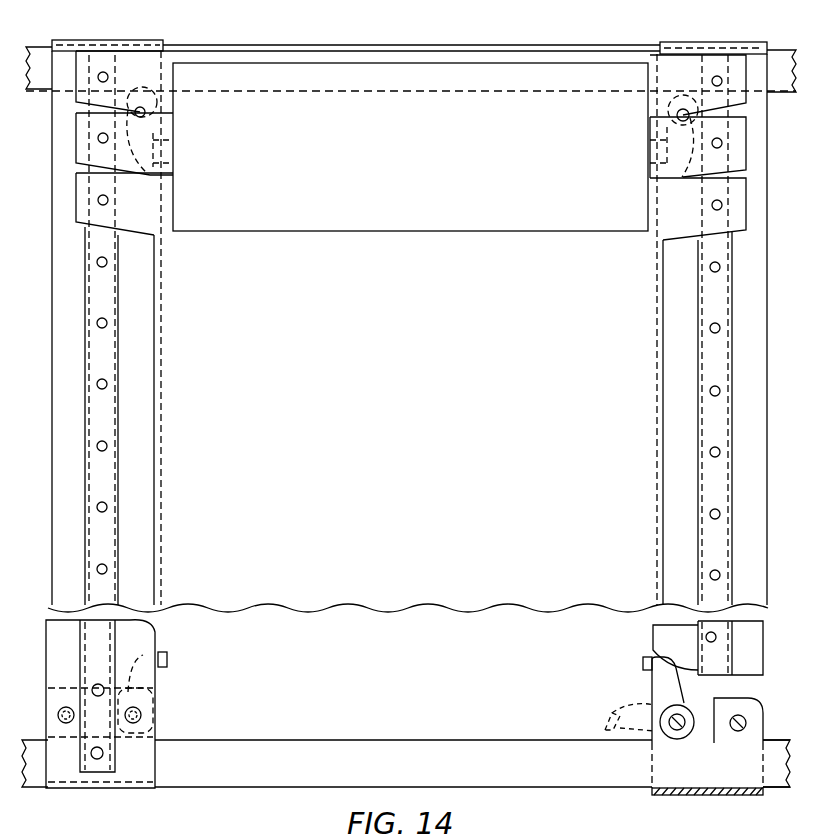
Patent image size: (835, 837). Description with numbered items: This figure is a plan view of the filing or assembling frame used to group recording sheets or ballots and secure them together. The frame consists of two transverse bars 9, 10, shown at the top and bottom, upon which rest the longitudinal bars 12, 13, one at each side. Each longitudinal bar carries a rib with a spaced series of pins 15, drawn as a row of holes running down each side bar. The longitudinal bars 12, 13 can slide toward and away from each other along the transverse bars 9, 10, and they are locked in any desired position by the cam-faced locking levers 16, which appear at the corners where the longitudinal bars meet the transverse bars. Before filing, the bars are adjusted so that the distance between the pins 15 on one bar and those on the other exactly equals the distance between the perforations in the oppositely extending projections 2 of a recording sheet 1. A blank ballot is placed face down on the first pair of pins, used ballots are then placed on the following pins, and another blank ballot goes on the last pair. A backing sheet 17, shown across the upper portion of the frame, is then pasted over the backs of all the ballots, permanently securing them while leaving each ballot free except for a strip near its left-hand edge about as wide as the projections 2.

The recording sheet 1 is at (411, 326).
The oppositely extending projections 2 is at (88, 187).
The transverse bar 9 is at (362, 48).
The transverse bar 10 is at (406, 767).
The longitudinal bar 12 is at (100, 704).
The longitudinal bar 13 is at (708, 682).
The pins 15 is at (107, 262).
The cam-faced locking levers 16 is at (158, 140).
The backing sheet 17 is at (410, 147).